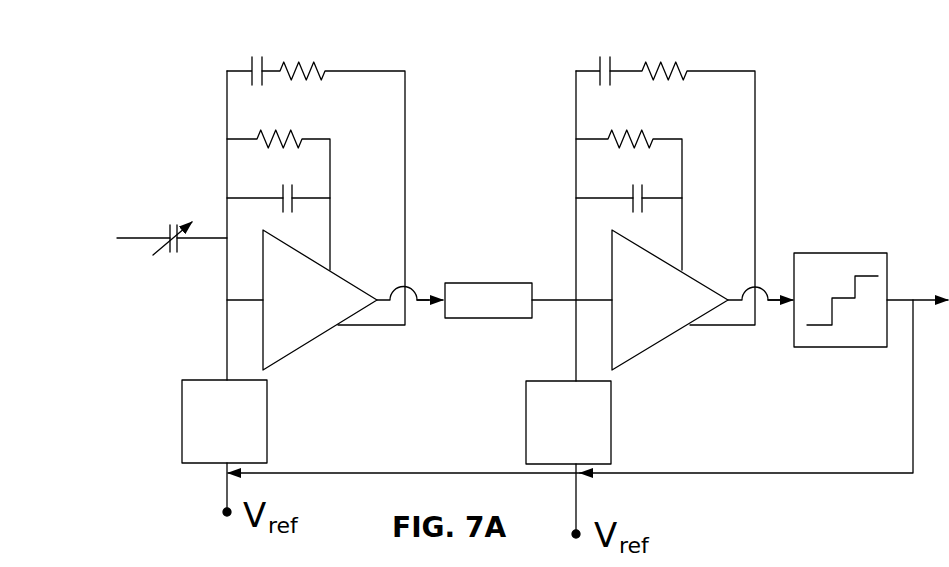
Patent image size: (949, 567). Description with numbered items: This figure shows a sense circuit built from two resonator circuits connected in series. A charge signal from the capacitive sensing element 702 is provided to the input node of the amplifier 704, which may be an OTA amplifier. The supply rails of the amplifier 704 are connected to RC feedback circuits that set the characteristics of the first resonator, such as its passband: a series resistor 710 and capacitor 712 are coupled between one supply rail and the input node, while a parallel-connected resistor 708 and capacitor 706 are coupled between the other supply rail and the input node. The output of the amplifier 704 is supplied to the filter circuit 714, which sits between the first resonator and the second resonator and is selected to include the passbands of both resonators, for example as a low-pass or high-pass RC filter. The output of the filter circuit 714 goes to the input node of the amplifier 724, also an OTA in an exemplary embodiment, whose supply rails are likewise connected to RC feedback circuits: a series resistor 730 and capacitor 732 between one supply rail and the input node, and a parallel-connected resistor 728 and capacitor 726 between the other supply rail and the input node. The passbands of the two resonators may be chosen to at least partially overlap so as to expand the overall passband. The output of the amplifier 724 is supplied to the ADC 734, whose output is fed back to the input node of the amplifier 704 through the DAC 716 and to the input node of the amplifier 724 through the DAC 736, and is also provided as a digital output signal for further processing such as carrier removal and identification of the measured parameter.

The capacitive sensing element 702 is at (172, 262).
The amplifier 704 is at (300, 245).
The capacitor 706 is at (293, 190).
The resistor 708 is at (278, 130).
The series resistor 710 is at (300, 53).
The capacitor 712 is at (255, 53).
The filter circuit 714 is at (520, 282).
The DAC 716 is at (267, 423).
The amplifier 724 is at (608, 258).
The capacitor 726 is at (637, 180).
The resistor 728 is at (628, 128).
The series resistor 730 is at (662, 50).
The capacitor 732 is at (607, 53).
The ADC 734 is at (868, 252).
The DAC 736 is at (611, 423).